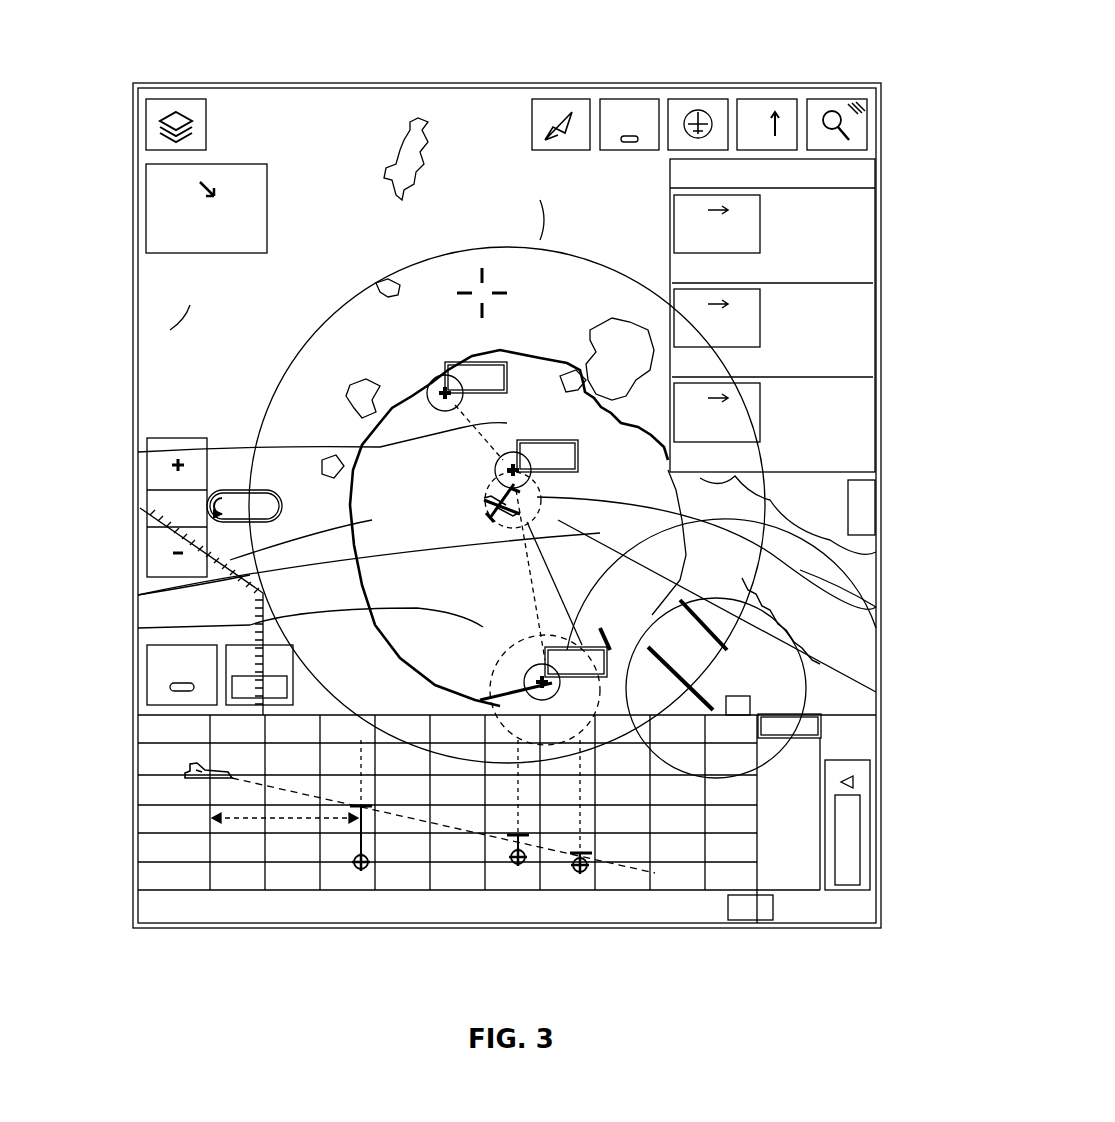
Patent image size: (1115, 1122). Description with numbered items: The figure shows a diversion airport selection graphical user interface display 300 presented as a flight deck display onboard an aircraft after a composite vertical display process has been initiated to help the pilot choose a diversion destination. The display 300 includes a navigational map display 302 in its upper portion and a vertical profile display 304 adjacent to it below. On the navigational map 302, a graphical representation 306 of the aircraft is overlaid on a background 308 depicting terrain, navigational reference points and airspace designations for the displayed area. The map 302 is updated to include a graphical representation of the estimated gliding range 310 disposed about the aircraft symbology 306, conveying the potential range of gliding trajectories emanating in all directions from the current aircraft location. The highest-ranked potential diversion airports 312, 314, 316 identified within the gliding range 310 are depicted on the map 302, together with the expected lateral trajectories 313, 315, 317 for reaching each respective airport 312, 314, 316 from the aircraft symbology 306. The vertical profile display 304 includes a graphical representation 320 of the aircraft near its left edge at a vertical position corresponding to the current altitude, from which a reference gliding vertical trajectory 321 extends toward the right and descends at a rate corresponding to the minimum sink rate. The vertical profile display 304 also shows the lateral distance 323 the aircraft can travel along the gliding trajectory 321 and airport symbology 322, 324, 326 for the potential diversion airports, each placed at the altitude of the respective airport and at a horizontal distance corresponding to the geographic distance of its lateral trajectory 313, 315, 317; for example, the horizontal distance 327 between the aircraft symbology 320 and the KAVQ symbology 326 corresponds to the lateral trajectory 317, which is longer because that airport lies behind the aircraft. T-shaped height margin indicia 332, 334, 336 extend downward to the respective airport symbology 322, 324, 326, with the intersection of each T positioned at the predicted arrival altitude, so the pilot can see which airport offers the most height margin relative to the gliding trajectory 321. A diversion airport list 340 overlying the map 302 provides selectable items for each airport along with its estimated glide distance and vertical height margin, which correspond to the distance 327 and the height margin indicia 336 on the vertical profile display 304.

The diversion airport selection graphical user interface display 300 is at (136, 52).
The navigational map display 302 is at (133, 325).
The vertical profile display 304 is at (138, 757).
The graphical representation of the aircraft 306 is at (481, 507).
The background 308 is at (290, 311).
The gliding range 310 is at (147, 660).
The potential diversion airport 312 is at (433, 372).
The lateral trajectory 313 is at (535, 438).
The potential diversion airport 314 is at (522, 663).
The lateral trajectory 315 is at (138, 595).
The potential diversion airport 316 is at (494, 465).
The lateral trajectory 317 is at (880, 607).
The graphical representation of the aircraft 320 is at (183, 768).
The reference gliding vertical trajectory 321 is at (253, 786).
The airport symbology 322 is at (567, 866).
The lateral distance 323 is at (776, 912).
The airport symbology 324 is at (507, 857).
The airport symbology 326 is at (347, 860).
The horizontal distance 327 is at (253, 818).
The vertical height margin indicia 332 is at (592, 861).
The vertical height margin indicia 334 is at (526, 845).
The vertical height margin indicia 336 is at (352, 842).
The diversion airport list 340 is at (667, 184).